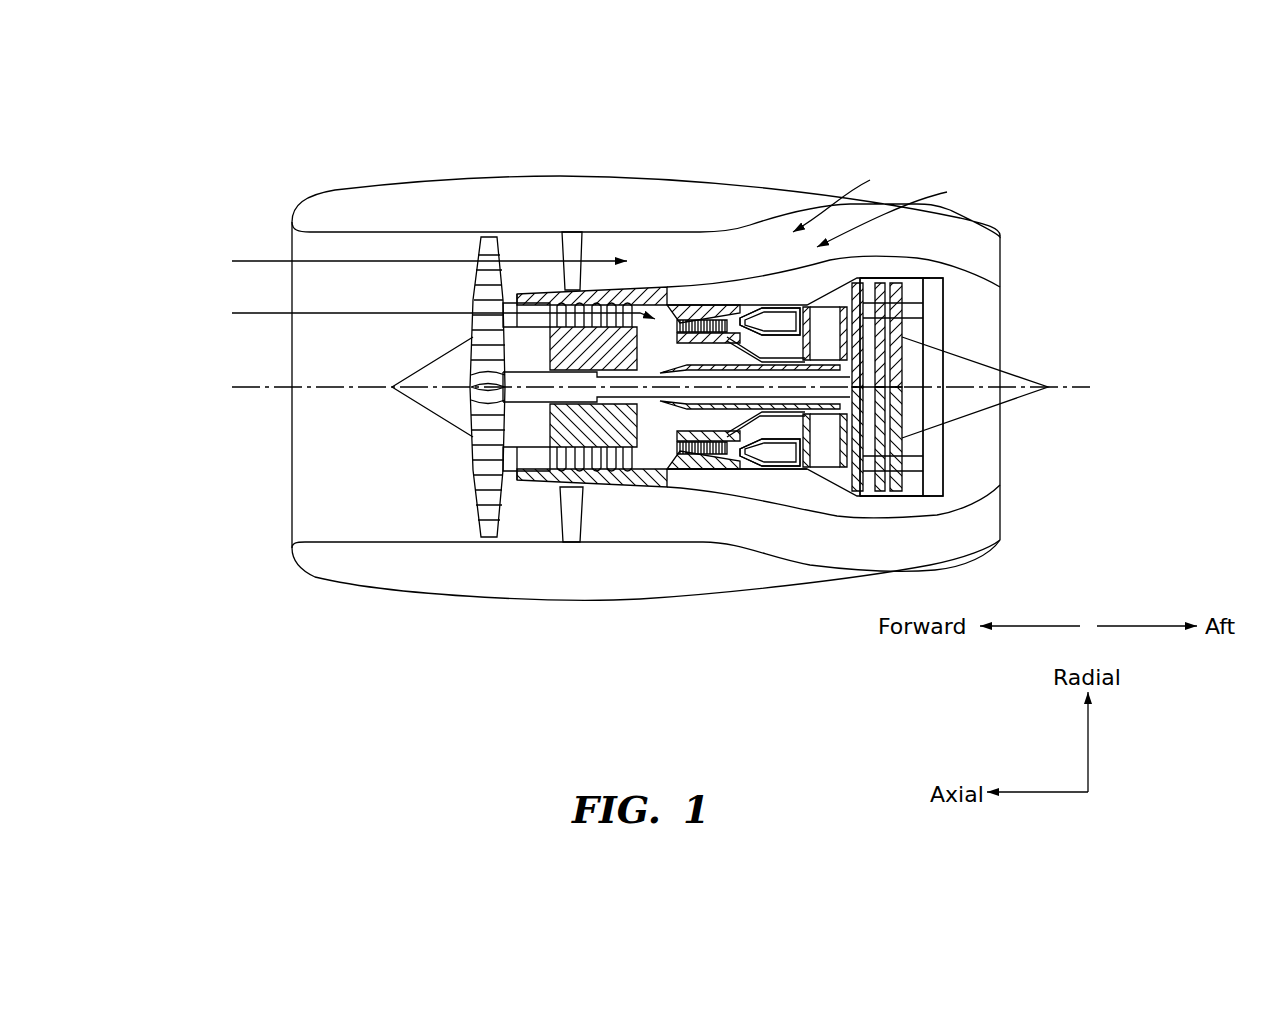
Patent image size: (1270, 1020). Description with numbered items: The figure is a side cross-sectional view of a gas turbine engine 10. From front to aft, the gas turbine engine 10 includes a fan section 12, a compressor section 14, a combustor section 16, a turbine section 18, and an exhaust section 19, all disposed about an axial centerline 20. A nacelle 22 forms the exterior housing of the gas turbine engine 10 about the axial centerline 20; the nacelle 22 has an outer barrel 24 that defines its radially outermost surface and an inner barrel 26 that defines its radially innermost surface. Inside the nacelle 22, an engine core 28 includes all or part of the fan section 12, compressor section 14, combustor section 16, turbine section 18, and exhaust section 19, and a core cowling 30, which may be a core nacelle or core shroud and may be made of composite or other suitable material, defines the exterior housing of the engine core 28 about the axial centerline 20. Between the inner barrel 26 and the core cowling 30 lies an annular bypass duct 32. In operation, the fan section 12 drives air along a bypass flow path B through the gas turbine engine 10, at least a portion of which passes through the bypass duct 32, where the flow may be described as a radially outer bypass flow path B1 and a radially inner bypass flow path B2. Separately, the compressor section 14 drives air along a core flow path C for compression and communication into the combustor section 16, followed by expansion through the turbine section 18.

The gas turbine engine 10 is at (1085, 115).
The fan section 12 is at (515, 150).
The compressor section 14 is at (725, 150).
The combustor section 16 is at (800, 150).
The turbine section 18 is at (802, 150).
The exhaust section 19 is at (935, 150).
The axial centerline 20 is at (1073, 388).
The nacelle 22 is at (380, 600).
The outer barrel 24 is at (490, 597).
The inner barrel 26 is at (413, 540).
The engine core 28 is at (768, 475).
The core cowling 30 is at (833, 517).
The bypass duct 32 is at (717, 274).
The bypass flow path B is at (263, 259).
The radially outer bypass flow path B1 is at (851, 195).
The radially inner bypass flow path B2 is at (898, 208).
The core flow path C is at (350, 313).